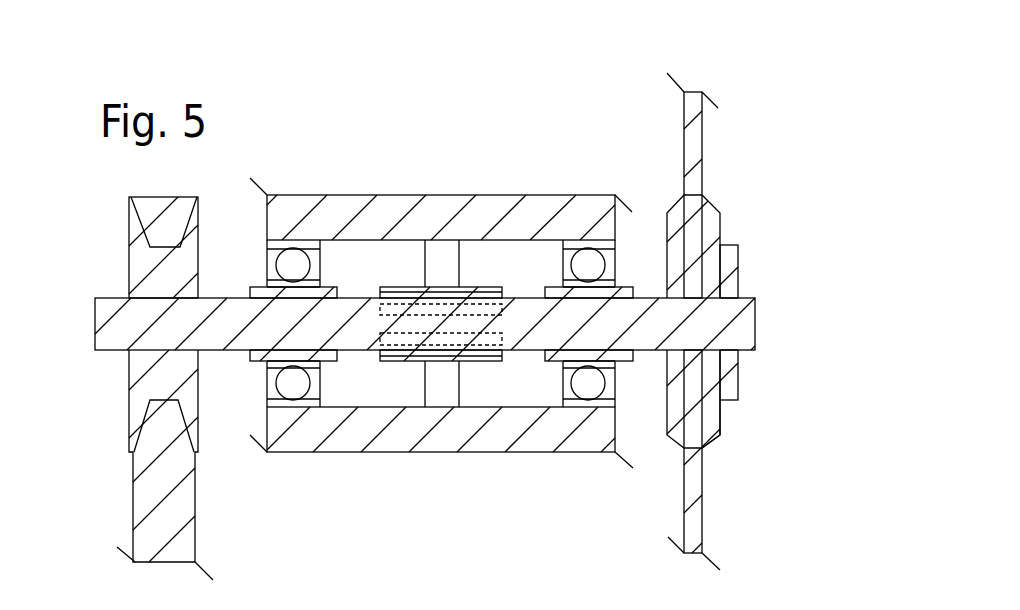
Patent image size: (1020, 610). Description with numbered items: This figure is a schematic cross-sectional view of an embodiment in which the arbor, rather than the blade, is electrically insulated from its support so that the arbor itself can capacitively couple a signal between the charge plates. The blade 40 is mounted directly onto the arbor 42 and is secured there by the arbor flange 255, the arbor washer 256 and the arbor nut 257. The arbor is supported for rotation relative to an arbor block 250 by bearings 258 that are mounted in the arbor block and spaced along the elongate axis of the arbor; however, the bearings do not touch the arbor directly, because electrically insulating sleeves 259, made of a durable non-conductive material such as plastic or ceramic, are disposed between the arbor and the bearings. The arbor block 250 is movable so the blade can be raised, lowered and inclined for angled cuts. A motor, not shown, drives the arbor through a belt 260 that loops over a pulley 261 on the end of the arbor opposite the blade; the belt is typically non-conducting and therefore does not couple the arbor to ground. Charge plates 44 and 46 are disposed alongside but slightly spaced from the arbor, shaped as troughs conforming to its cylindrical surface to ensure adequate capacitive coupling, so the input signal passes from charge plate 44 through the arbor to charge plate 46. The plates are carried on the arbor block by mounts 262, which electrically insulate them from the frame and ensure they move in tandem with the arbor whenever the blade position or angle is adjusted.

The blade 40 is at (702, 150).
The arbor 42 is at (756, 317).
The charge plate 44 is at (403, 285).
The charge plate 46 is at (410, 360).
The arbor block 250 is at (415, 205).
The arbor flange 255 is at (676, 440).
The arbor washer 256 is at (718, 428).
The arbor nut 257 is at (737, 372).
The bearings 258 is at (616, 378).
The electrically insulating sleeves 259 is at (545, 358).
The belt 260 is at (133, 518).
The pulley 261 is at (128, 270).
The mounts 262 is at (460, 257).